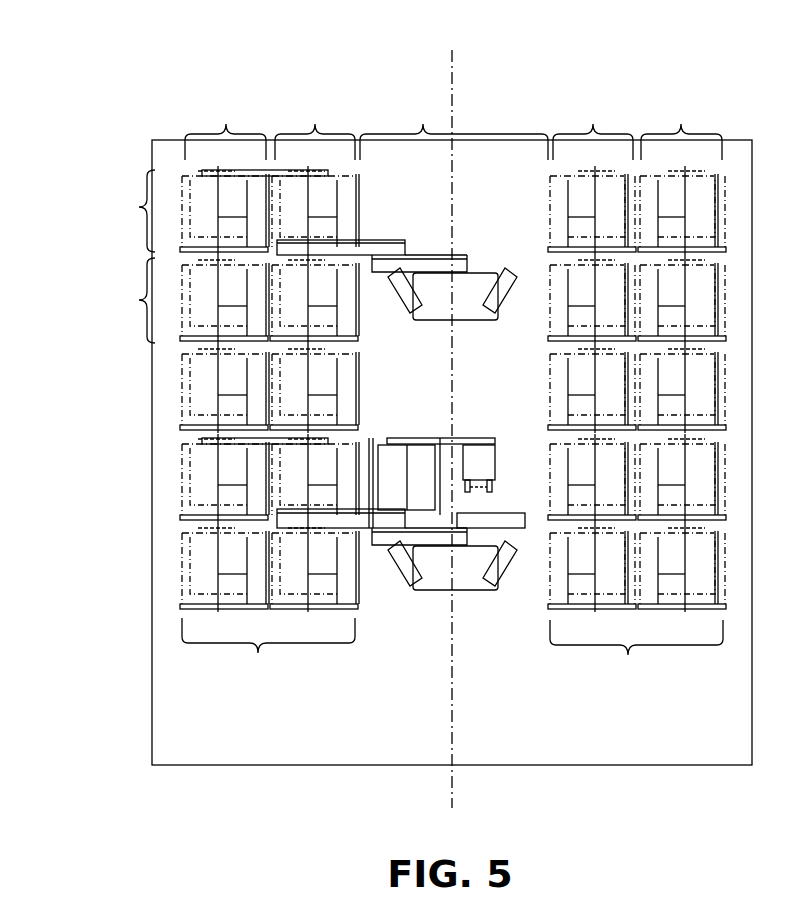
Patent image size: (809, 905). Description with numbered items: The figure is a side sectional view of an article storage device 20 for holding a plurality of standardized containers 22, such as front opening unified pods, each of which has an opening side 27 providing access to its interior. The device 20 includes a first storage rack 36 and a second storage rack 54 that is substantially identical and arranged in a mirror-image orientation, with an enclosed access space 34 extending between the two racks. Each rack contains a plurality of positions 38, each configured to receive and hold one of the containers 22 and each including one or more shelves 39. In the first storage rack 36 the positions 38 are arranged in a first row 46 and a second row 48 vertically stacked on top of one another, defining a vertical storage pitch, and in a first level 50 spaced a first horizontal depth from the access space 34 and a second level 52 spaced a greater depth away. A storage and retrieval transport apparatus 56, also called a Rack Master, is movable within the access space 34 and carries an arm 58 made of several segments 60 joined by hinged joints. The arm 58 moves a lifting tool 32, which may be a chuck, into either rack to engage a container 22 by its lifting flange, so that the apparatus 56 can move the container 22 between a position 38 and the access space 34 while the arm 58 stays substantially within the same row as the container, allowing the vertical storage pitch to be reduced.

The article storage device 20 is at (108, 97).
The standardized container 22 is at (192, 493).
The opening side 27 is at (185, 463).
The lifting tool 32 is at (258, 170).
The access space 34 is at (454, 125).
The first storage rack 36 is at (268, 654).
The position 38 is at (453, 389).
The shelf 39 is at (207, 249).
The first row 46 is at (139, 207).
The second row 48 is at (139, 300).
The first level 50 is at (454, 125).
The second level 52 is at (453, 125).
The second storage rack 54 is at (636, 655).
The storage and retrieval transport apparatus 56 is at (435, 307).
The arm 58 is at (424, 248).
The segment 60 is at (368, 241).